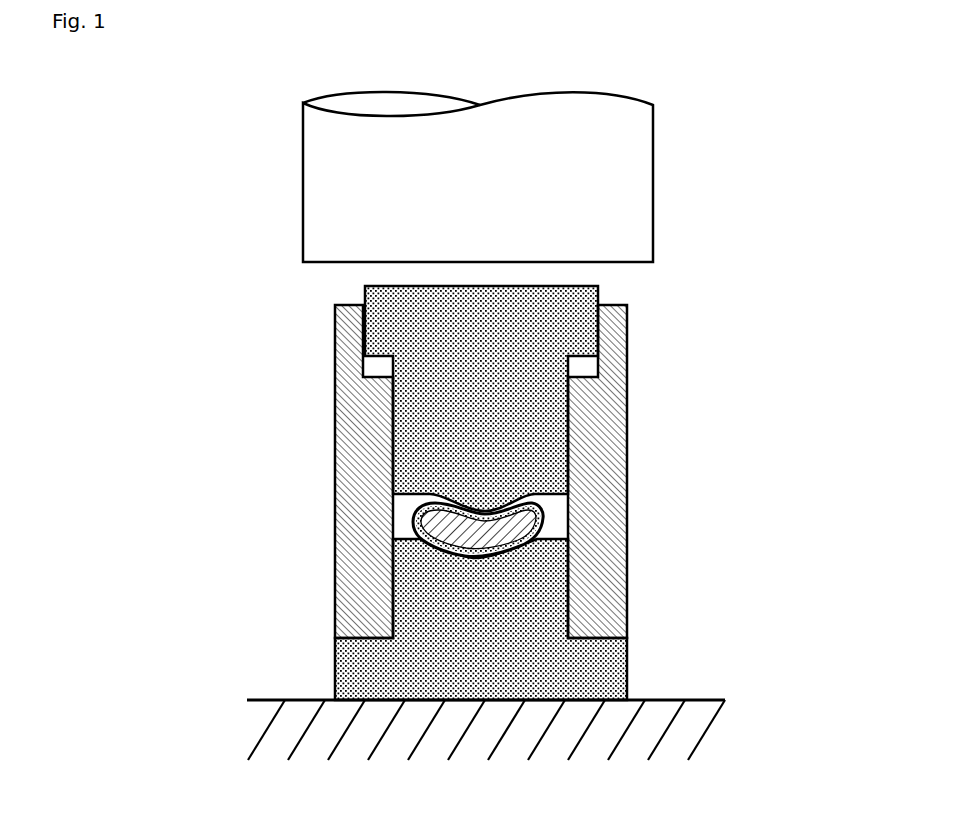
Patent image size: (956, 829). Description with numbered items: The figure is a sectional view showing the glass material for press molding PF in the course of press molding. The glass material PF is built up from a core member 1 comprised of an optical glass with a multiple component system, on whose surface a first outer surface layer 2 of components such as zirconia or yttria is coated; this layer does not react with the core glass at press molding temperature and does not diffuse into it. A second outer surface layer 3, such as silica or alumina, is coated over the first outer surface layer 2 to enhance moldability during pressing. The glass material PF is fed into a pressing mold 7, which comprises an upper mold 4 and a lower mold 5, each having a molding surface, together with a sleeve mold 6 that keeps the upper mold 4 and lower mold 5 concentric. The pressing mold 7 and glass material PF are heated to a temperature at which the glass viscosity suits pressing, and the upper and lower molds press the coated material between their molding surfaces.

The core member 1 is at (480, 530).
The first outer surface layer 2 is at (540, 508).
The second outer surface layer 3 is at (540, 538).
The upper mold 4 is at (393, 412).
The lower mold 5 is at (435, 585).
The sleeve mold 6 is at (360, 498).
The pressing mold 7 is at (352, 493).
The glass material for press molding PF is at (637, 509).